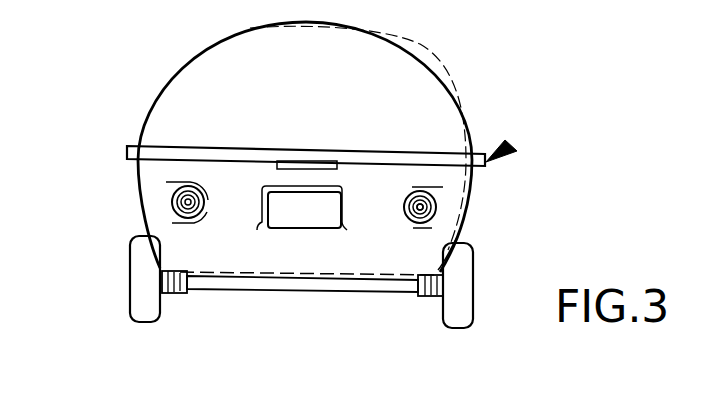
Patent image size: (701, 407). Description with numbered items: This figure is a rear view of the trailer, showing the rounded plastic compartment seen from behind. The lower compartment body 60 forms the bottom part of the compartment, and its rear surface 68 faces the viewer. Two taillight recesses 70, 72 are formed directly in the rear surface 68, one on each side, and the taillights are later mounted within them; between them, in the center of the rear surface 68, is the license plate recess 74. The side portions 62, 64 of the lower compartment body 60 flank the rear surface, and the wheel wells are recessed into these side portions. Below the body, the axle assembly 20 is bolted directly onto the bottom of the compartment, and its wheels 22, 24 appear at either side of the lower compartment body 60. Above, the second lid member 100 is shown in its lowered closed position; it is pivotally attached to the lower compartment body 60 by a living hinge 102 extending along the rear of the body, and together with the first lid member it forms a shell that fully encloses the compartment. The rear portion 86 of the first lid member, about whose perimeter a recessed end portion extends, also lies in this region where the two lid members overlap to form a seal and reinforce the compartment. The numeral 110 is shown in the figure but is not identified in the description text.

The second lid member 100 is at (437, 95).
The living hinge 102 is at (300, 163).
The side portion 64 is at (133, 175).
The taillight recess 70 is at (170, 207).
The rear surface 68 is at (388, 208).
The license plate recess 74 is at (301, 218).
The side portion 62 is at (455, 200).
The taillight recess 72 is at (437, 207).
The direction arrow 110 is at (516, 150).
The lower compartment body 60 is at (444, 255).
The axle assembly 20 is at (333, 283).
The wheel 22 is at (455, 328).
The wheel 24 is at (143, 322).
The rear portion 86 is at (19, 395).